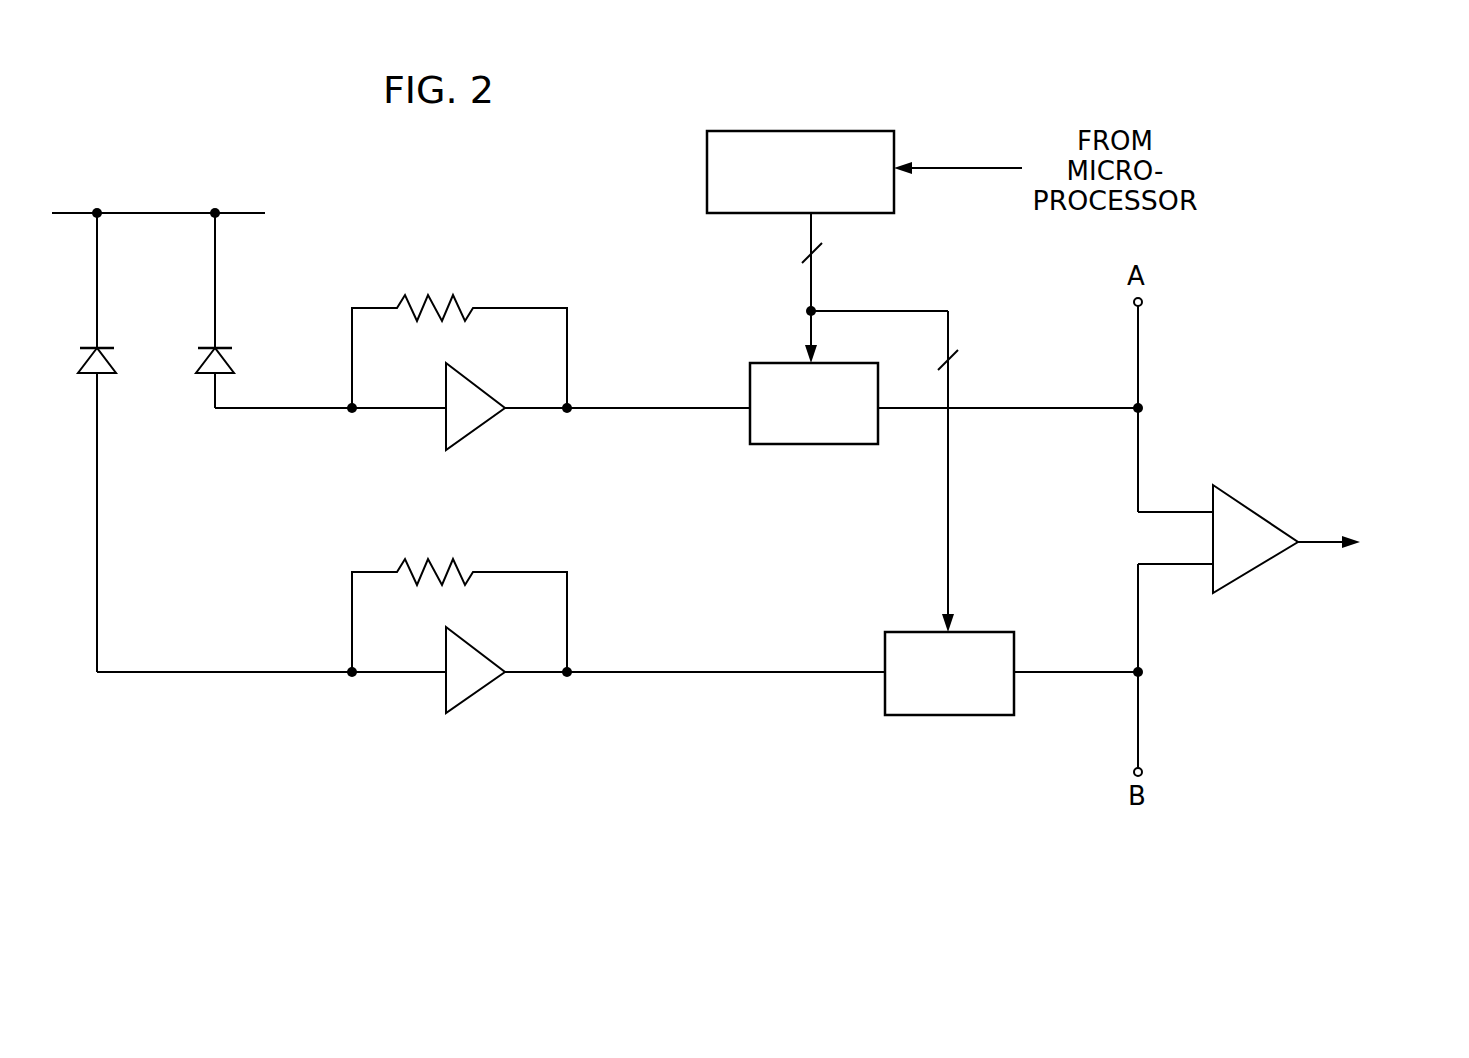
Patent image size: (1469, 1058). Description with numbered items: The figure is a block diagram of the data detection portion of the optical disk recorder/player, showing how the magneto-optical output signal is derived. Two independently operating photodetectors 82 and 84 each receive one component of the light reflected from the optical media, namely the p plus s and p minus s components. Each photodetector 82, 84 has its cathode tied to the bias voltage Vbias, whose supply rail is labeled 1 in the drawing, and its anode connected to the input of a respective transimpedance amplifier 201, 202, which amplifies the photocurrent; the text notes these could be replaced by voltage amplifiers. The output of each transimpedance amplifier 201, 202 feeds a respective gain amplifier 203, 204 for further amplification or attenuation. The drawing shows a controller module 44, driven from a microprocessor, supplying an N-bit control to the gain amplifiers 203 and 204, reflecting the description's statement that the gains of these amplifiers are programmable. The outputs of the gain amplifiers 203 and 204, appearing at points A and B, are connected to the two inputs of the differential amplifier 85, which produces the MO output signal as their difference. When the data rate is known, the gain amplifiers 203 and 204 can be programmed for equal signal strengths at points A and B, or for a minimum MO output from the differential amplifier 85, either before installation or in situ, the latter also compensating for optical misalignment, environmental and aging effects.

The bias voltage supply line 1 is at (252, 213).
The photodetector 84 is at (110, 362).
The photodetector 82 is at (230, 362).
The transimpedance amplifier 201 is at (477, 382).
The transimpedance amplifier 202 is at (480, 650).
The gain amplifier 203 is at (763, 363).
The gain amplifier 204 is at (1000, 635).
The controller module 44 is at (880, 129).
The differential amplifier 85 is at (1257, 515).